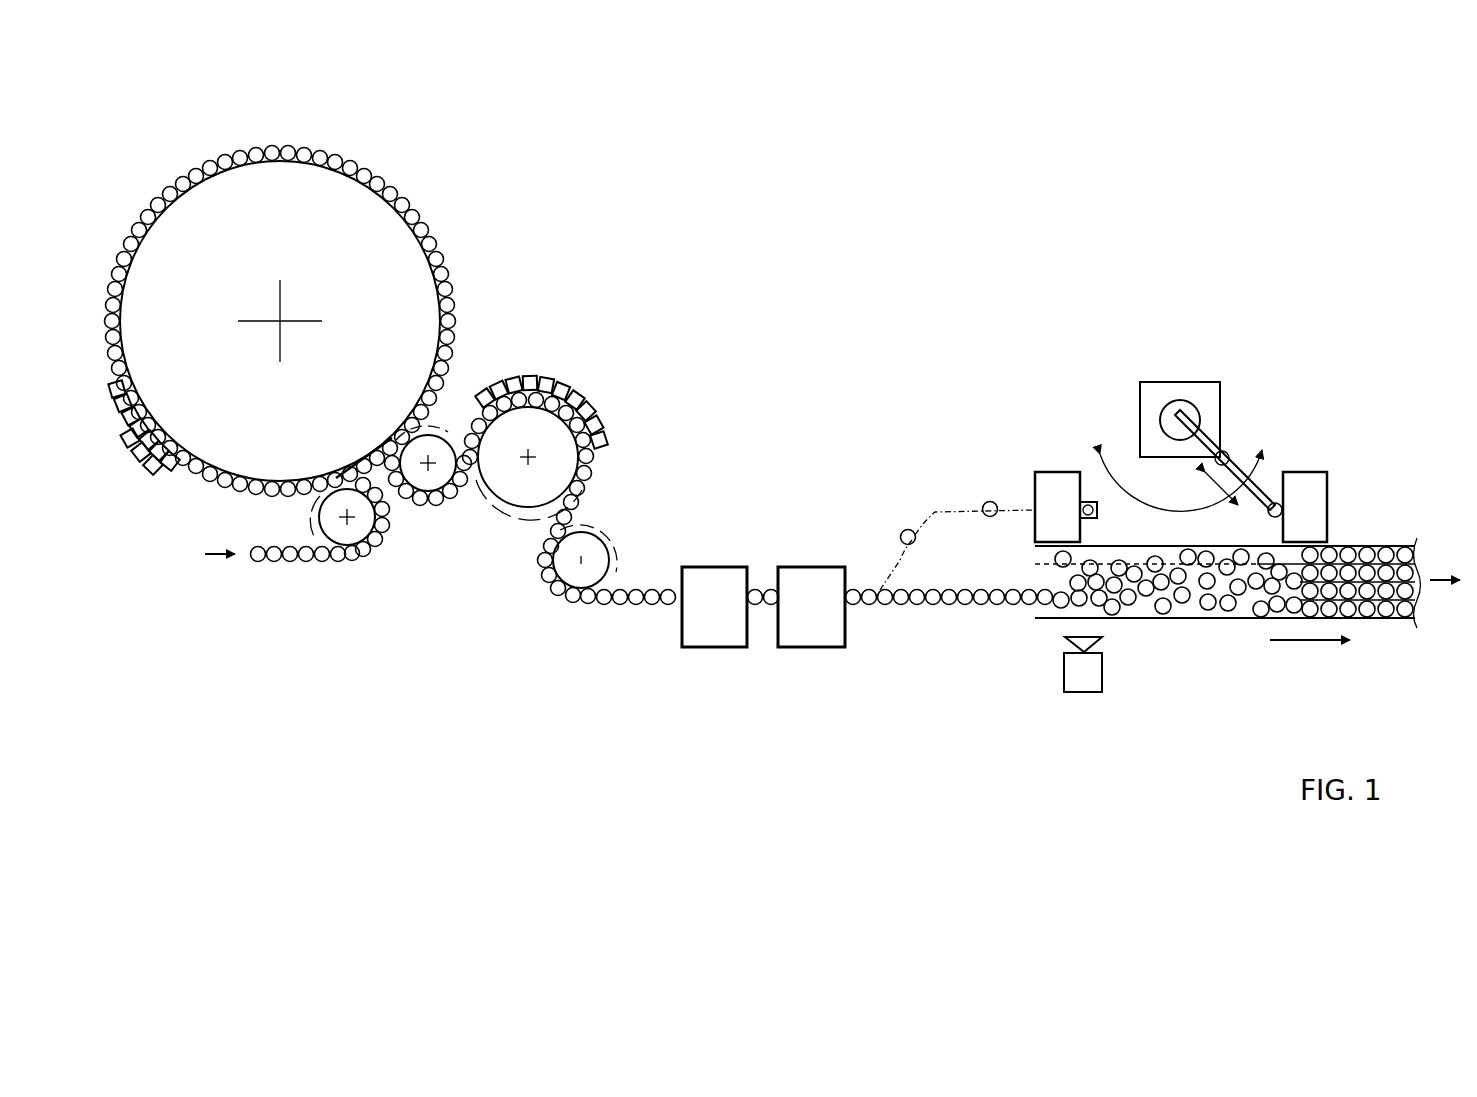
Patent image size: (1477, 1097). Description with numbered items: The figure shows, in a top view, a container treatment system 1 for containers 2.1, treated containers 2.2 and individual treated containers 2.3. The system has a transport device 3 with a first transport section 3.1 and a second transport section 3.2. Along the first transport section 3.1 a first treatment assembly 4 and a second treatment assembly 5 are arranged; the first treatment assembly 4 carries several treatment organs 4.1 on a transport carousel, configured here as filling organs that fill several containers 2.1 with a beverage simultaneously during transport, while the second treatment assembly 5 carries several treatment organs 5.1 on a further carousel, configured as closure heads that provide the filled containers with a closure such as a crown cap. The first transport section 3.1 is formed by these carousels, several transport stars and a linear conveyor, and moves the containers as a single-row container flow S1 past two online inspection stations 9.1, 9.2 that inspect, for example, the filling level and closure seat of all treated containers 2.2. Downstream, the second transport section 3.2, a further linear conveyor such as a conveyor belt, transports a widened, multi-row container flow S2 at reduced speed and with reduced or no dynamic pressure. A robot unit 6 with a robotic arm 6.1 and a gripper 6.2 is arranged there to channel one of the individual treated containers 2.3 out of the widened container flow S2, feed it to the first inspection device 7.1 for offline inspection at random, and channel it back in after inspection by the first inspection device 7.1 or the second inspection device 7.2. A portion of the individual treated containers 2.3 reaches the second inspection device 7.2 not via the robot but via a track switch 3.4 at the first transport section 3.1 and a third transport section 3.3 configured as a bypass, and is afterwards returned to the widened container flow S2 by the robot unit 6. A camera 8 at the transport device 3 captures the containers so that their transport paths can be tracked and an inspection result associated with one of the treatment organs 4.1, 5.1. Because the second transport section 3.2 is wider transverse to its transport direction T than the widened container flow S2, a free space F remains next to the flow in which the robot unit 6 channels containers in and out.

The container treatment system 1 is at (1105, 195).
The containers 2.1 is at (275, 562).
The treated containers 2.2 is at (630, 606).
The individual treated containers 2.3 is at (990, 500).
The transport device 3 is at (866, 630).
The first transport section 3.1 is at (350, 152).
The second transport section 3.2 is at (1133, 622).
The third transport section 3.3 is at (930, 505).
The track switch 3.4 is at (873, 584).
The first treatment assembly 4 is at (385, 222).
The treatment organs 4.1 is at (152, 452).
The second treatment assembly 5 is at (548, 395).
The treatment organs 5.1 is at (605, 418).
The robot unit 6 is at (1187, 372).
The robotic arm 6.1 is at (1205, 430).
The gripper 6.2 is at (1270, 490).
The first inspection device 7.1 is at (1318, 482).
The second inspection device 7.2 is at (1060, 478).
The camera 8 is at (1068, 673).
The inspection station 9.1 is at (703, 633).
The inspection station 9.2 is at (800, 633).
The single-row container flow S1 is at (598, 490).
The widened container flow S2 is at (1203, 626).
The free space F is at (1146, 552).
The transport direction T is at (1300, 645).